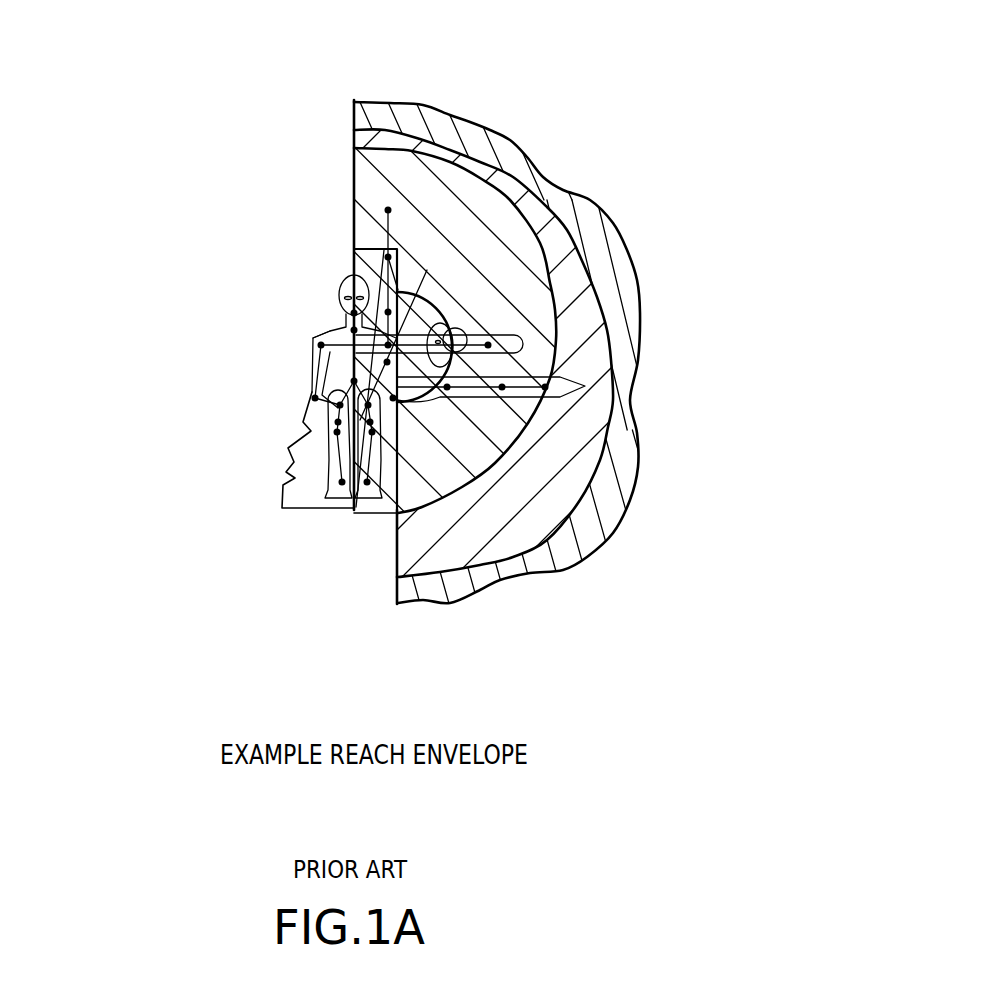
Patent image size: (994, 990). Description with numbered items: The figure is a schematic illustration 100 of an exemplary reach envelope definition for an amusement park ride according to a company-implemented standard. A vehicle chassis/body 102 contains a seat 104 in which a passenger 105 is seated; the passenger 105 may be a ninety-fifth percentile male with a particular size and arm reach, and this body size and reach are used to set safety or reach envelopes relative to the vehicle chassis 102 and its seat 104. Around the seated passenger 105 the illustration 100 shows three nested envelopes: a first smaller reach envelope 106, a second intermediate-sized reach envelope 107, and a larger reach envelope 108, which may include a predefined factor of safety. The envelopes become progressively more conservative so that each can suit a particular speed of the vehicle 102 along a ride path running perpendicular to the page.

The schematic illustration 100 is at (497, 317).
The vehicle chassis/body 102 is at (247, 500).
The seat 104 is at (275, 388).
The passenger 105 is at (290, 331).
The first smaller reach envelope 106 is at (537, 245).
The second intermediate-sized reach envelope 107 is at (588, 277).
The larger reach envelope 108 is at (640, 322).